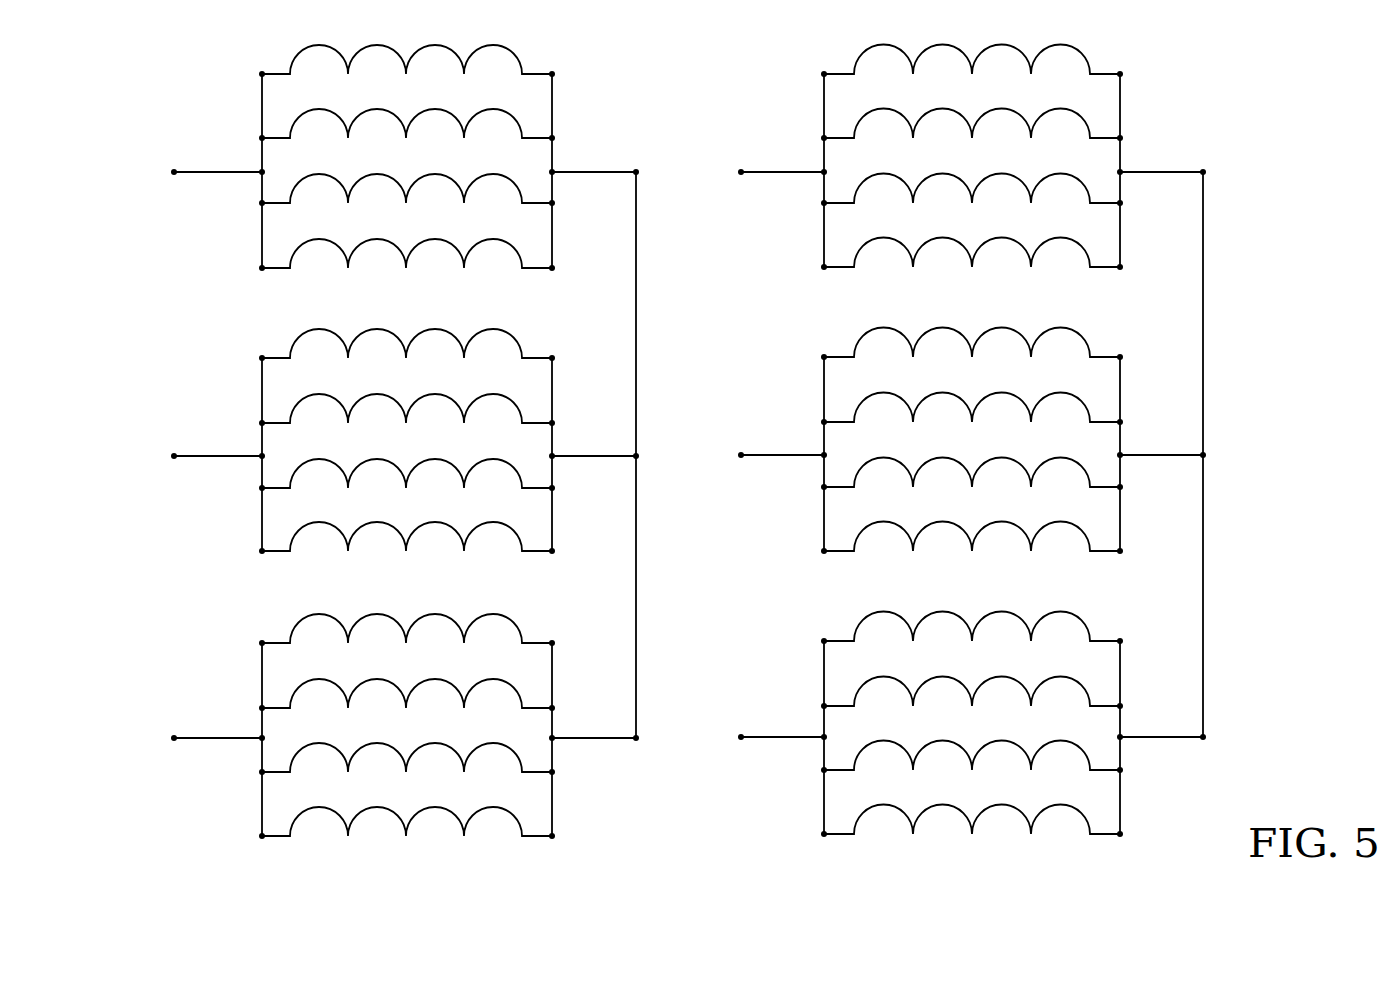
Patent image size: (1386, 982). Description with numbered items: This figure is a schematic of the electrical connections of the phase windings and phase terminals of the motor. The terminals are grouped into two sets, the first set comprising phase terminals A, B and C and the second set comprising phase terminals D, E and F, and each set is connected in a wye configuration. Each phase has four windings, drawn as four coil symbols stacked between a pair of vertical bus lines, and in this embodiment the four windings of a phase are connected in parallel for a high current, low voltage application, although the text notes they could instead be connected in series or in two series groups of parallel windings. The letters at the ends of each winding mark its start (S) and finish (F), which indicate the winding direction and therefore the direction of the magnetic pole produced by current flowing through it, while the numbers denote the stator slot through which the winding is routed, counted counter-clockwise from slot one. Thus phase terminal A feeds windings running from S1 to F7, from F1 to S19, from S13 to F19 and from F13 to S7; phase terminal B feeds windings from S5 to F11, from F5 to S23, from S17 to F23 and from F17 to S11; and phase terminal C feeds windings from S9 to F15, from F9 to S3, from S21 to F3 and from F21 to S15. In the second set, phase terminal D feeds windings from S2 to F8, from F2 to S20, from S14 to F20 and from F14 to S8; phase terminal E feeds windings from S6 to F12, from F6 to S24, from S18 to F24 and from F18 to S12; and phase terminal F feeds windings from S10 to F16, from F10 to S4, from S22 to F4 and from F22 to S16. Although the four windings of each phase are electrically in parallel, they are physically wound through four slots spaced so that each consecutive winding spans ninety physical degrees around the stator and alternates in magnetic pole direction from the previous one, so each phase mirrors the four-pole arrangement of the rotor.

The phase terminal A is at (389, 170).
The phase terminal B is at (389, 454).
The phase terminal C is at (389, 738).
The phase terminal D is at (956, 170).
The phase terminal E is at (956, 453).
The phase terminal F is at (956, 737).
The winding start at slot 1 S1 is at (406, 66).
The winding finish at slot 7 F7 is at (425, 66).
The winding finish at slot 1 F1 is at (414, 130).
The winding start at slot 19 S19 is at (432, 130).
The winding start at slot 13 S13 is at (406, 195).
The winding finish at slot 19 F19 is at (432, 195).
The winding finish at slot 13 F13 is at (400, 260).
The winding start at slot 7 S7 is at (425, 260).
The winding start at slot 5 S5 is at (413, 350).
The winding finish at slot 11 F11 is at (432, 350).
The winding finish at slot 5 F5 is at (414, 415).
The winding start at slot 23 S23 is at (432, 415).
The winding start at slot 17 S17 is at (406, 480).
The winding finish at slot 23 F23 is at (432, 480).
The winding finish at slot 17 F17 is at (407, 543).
The winding start at slot 11 S11 is at (432, 543).
The winding start at slot 9 S9 is at (413, 635).
The winding finish at slot 15 F15 is at (432, 635).
The winding finish at slot 9 F9 is at (407, 700).
The winding start at slot 3 S3 is at (425, 700).
The winding start at slot 21 S21 is at (399, 764).
The winding finish at slot 3 F3 is at (425, 764).
The winding finish at slot 21 F21 is at (407, 828).
The winding start at slot 15 S15 is at (432, 828).
The winding start at slot 2 S2 is at (971, 66).
The winding finish at slot 8 F8 is at (990, 66).
The winding finish at slot 2 F2 is at (979, 130).
The winding start at slot 20 S20 is at (997, 130).
The winding start at slot 14 S14 is at (971, 195).
The winding finish at slot 20 F20 is at (997, 195).
The winding finish at slot 14 F14 is at (965, 258).
The winding start at slot 8 S8 is at (990, 258).
The winding start at slot 6 S6 is at (978, 349).
The winding finish at slot 12 F12 is at (997, 349).
The winding finish at slot 6 F6 is at (979, 414).
The winding start at slot 24 S24 is at (997, 414).
The winding start at slot 18 S18 is at (971, 479).
The winding finish at slot 24 F24 is at (997, 479).
The winding finish at slot 18 F18 is at (972, 543).
The winding start at slot 12 S12 is at (997, 543).
The winding start at slot 10 S10 is at (971, 633).
The winding finish at slot 16 F16 is at (997, 633).
The winding finish at slot 10 F10 is at (965, 698).
The winding start at slot 4 S4 is at (990, 698).
The winding start at slot 22 S22 is at (964, 762).
The winding finish at slot 4 F4 is at (990, 762).
The winding finish at slot 22 F22 is at (972, 826).
The winding start at slot 16 S16 is at (997, 826).